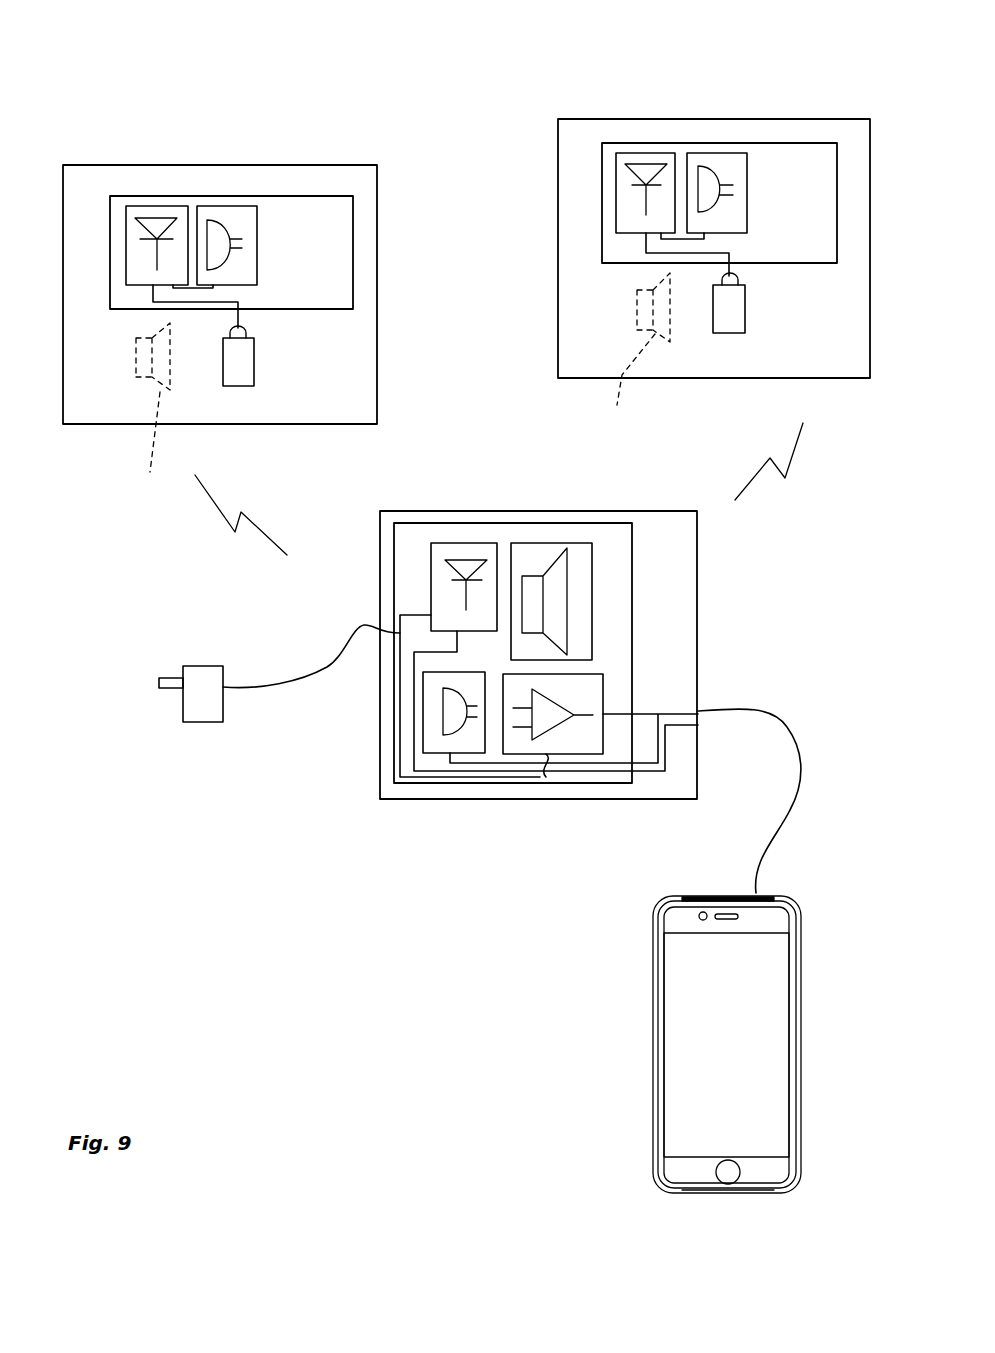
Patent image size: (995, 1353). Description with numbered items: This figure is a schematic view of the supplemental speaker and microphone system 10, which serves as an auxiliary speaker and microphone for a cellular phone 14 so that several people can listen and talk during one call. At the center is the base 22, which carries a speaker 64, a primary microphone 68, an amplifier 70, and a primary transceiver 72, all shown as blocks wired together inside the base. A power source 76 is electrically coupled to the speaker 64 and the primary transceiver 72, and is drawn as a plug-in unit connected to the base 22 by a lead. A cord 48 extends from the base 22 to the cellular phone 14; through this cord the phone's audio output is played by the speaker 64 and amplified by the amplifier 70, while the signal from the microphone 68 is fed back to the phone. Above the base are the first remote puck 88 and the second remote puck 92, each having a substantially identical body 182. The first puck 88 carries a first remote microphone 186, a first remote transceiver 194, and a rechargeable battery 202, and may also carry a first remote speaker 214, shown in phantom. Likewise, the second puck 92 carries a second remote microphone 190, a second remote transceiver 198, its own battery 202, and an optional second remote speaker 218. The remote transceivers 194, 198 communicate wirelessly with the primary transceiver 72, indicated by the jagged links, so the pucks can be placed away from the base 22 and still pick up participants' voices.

The supplemental speaker and microphone system 10 is at (305, 805).
The cellular phone 14 is at (653, 1005).
The base 22 is at (698, 655).
The cord 48 is at (785, 721).
The speaker 64 is at (543, 543).
The primary microphone 68 is at (423, 693).
The amplifier 70 is at (603, 685).
The primary transceiver 72 is at (470, 543).
The power source 76 is at (205, 680).
The first remote puck 88 is at (188, 131).
The second remote puck 92 is at (730, 66).
The body 182 is at (379, 243).
The first remote microphone 186 is at (226, 206).
The second remote microphone 190 is at (713, 153).
The first remote transceiver 194 is at (149, 206).
The second remote transceiver 198 is at (616, 172).
The rechargeable battery 202 is at (237, 377).
The first remote speaker 214 is at (139, 412).
The second remote speaker 218 is at (643, 357).